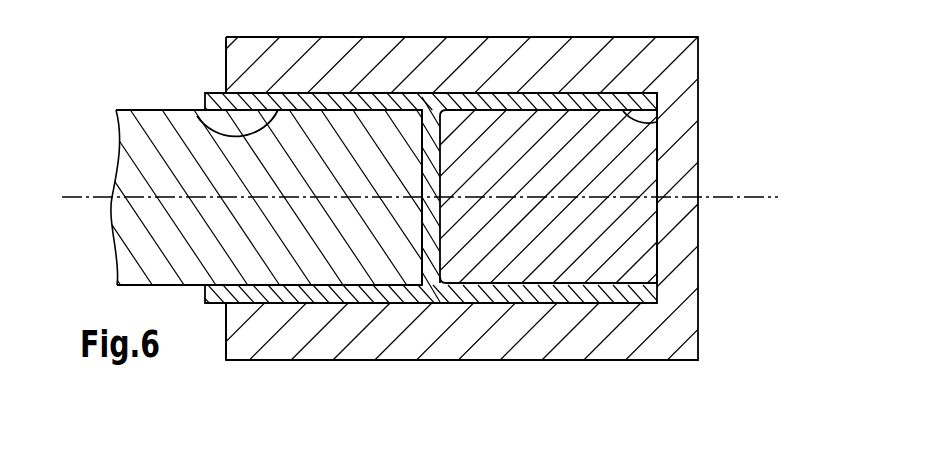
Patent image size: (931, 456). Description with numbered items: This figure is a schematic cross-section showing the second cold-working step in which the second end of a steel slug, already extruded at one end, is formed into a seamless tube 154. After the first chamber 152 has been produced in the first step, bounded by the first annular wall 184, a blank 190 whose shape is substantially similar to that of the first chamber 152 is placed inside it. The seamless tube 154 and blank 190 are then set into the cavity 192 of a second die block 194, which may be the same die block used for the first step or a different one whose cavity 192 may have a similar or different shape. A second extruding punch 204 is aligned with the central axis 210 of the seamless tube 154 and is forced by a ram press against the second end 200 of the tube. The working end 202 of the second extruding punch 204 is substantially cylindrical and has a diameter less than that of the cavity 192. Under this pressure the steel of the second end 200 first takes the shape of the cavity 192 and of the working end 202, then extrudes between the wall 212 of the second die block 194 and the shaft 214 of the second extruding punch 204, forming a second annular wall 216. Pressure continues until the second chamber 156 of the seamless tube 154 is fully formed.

The first chamber 152 is at (658, 122).
The seamless tube 154 is at (463, 92).
The second chamber 156 is at (197, 116).
The first annular wall 184 is at (658, 100).
The blank 190 is at (658, 168).
The cavity 192 is at (226, 305).
The second die block 194 is at (640, 360).
The second end 200 is at (413, 136).
The working end 202 is at (432, 258).
The second extruding punch 204 is at (130, 99).
The central axis 210 is at (747, 197).
The wall 212 is at (227, 62).
The shaft 214 is at (116, 233).
The second annular wall 216 is at (290, 93).